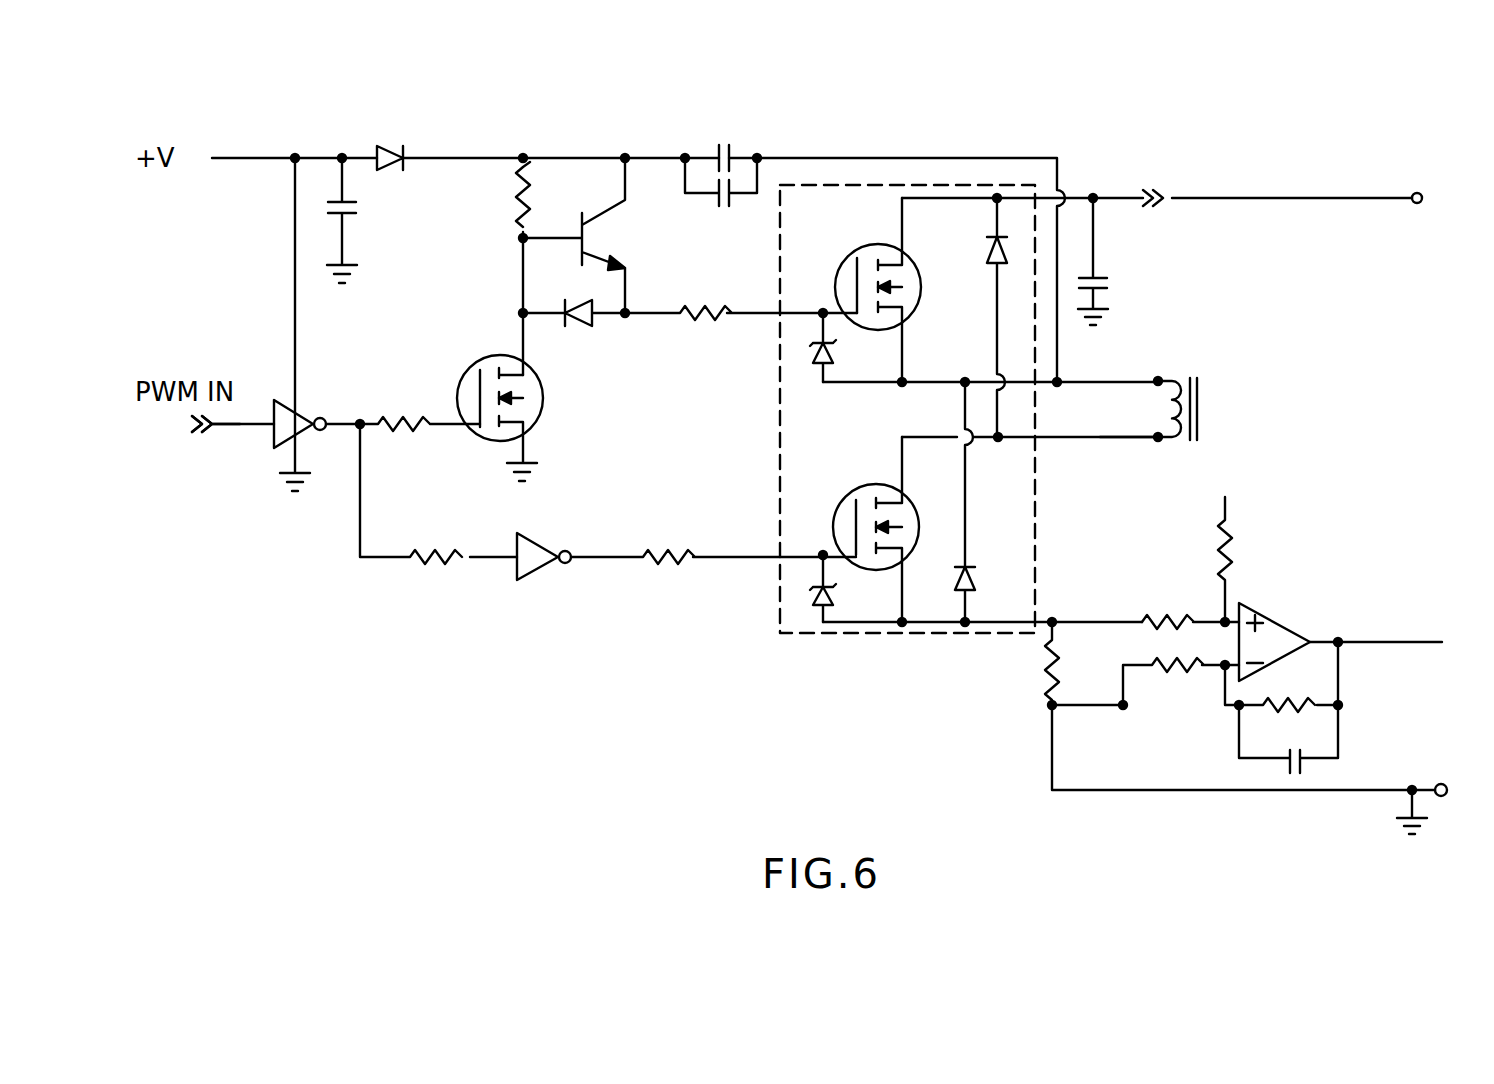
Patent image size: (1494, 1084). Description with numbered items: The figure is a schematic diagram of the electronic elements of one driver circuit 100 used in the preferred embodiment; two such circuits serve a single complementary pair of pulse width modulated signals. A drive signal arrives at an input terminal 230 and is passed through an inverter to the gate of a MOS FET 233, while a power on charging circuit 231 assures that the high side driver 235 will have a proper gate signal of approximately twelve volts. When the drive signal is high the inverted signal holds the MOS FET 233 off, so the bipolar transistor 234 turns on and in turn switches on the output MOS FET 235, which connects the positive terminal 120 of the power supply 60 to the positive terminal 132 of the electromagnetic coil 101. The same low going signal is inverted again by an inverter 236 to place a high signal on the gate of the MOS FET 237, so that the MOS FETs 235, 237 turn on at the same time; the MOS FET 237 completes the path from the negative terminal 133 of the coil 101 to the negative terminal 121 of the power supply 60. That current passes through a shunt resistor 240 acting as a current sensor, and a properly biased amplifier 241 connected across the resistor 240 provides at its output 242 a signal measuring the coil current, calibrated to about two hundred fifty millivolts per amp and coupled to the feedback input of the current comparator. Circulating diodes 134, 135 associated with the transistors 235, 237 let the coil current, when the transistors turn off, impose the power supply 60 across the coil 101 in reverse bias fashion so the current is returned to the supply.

The power supply circuit 100 is at (1097, 137).
The positive terminal 120 is at (1414, 204).
The negative terminal 121 is at (1438, 782).
The positive terminal 132 is at (1172, 378).
The negative terminal 133 is at (1167, 442).
The electromagnetic coil 101 is at (1200, 410).
The circulating diode 134 is at (986, 254).
The circulating diode 135 is at (978, 582).
The power supply 60 is at (1462, 546).
The input terminal 230 is at (237, 428).
The power on charging circuit 231 is at (447, 240).
The MOS FET 233 is at (470, 364).
The bipolar transistor 234 is at (582, 226).
The high side driver MOS FET 235 is at (848, 250).
The inverter 236 is at (540, 540).
The MOS FET 237 is at (850, 490).
The shunt resistor 240 is at (1040, 680).
The amplifier 241 is at (1277, 618).
The output 242 is at (1410, 640).